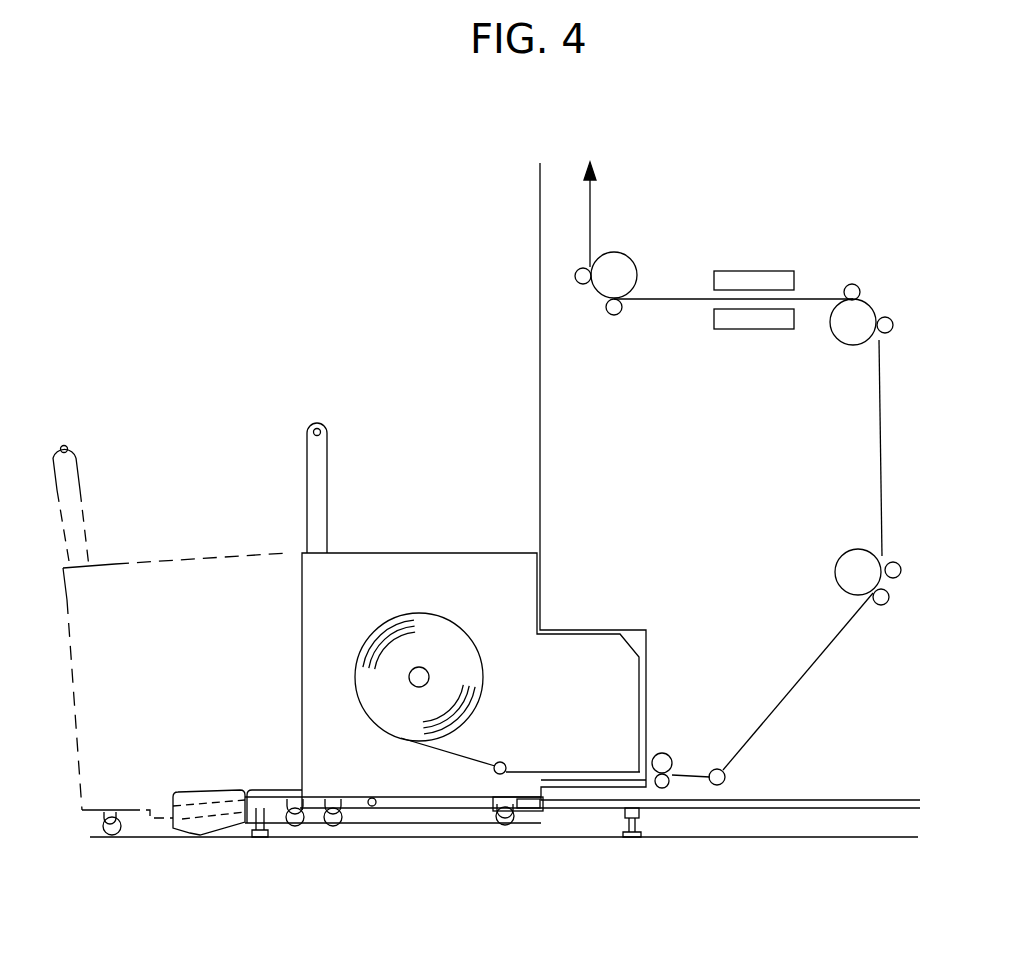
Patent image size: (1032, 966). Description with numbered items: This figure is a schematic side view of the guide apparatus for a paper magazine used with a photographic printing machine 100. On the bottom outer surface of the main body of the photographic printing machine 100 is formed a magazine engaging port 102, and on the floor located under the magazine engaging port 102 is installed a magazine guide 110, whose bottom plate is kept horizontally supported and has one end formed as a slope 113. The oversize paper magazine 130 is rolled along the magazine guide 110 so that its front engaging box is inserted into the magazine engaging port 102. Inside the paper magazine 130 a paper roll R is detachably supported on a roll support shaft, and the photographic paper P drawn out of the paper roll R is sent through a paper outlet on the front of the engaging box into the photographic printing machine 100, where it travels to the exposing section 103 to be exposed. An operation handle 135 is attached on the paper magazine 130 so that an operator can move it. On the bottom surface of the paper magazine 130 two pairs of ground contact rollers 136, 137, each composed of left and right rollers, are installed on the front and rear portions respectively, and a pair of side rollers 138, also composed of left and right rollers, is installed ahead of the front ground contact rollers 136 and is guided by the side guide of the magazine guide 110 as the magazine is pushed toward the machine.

The photographic printing machine 100 is at (666, 500).
The magazine engaging port 102 is at (593, 632).
The exposing section 103 is at (766, 322).
The magazine guide 110 is at (505, 860).
The slope 113 is at (225, 830).
The paper magazine 130 is at (400, 602).
The operation handle 135 is at (308, 457).
The front ground contact rollers 136 is at (513, 828).
The rear ground contact rollers 137 is at (330, 827).
The side rollers 138 is at (530, 810).
The paper roll R is at (387, 623).
The photographic paper P is at (830, 642).